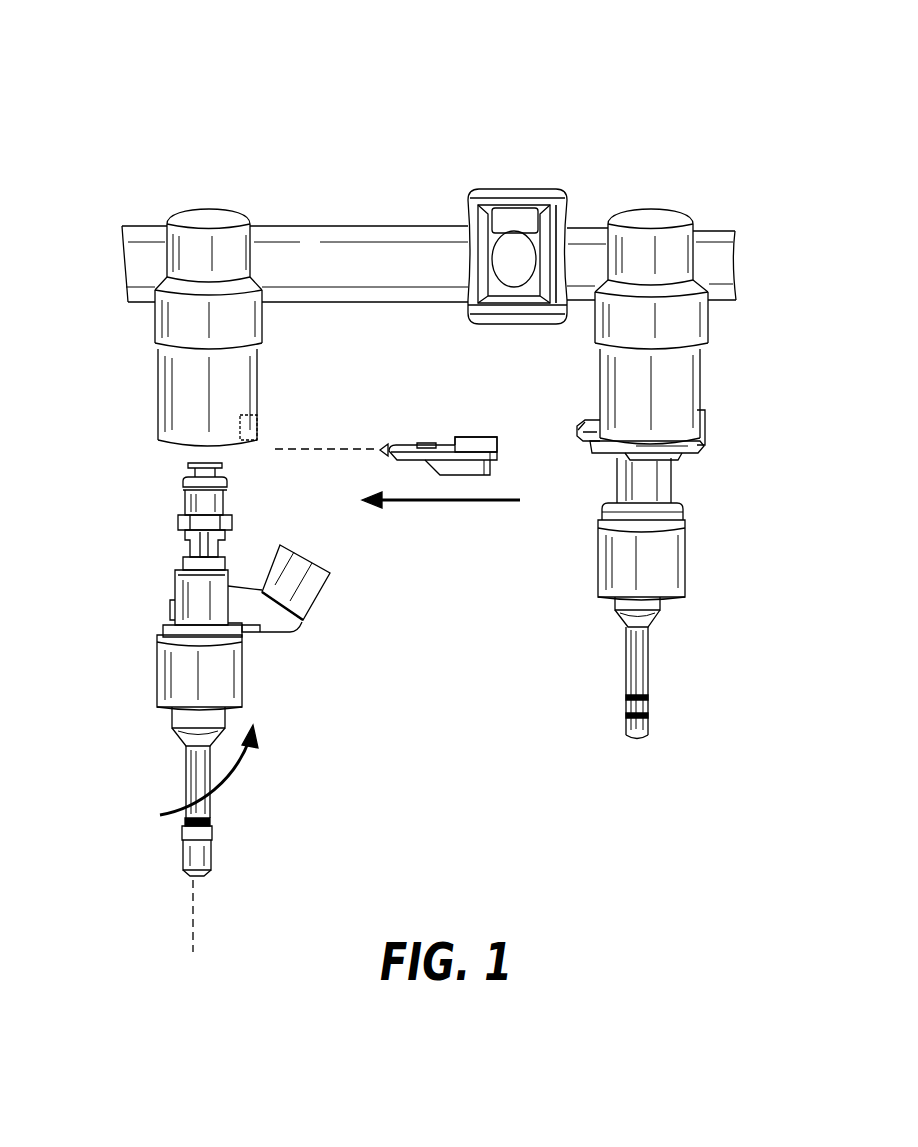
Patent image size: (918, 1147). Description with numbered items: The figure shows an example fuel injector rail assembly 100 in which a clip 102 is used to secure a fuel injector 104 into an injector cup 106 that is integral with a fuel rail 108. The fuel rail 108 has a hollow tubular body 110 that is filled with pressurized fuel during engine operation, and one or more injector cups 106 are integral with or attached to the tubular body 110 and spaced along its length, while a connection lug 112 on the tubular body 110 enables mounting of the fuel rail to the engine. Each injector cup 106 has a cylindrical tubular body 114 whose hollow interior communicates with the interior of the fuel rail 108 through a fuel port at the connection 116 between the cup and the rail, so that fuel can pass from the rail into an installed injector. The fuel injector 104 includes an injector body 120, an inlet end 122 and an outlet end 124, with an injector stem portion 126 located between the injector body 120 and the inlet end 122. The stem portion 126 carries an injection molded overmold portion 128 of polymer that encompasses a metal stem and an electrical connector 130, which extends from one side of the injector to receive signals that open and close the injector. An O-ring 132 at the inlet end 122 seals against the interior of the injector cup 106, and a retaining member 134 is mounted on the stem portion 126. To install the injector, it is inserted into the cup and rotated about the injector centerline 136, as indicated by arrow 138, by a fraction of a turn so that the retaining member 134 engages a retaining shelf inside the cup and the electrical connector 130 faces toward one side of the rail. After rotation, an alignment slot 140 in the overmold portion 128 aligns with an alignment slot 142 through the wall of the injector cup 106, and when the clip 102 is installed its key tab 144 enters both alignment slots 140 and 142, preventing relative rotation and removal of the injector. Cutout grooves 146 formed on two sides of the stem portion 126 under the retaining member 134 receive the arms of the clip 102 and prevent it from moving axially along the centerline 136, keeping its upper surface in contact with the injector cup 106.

The fuel injector rail assembly 100 is at (106, 48).
The clip 102 is at (448, 405).
The fuel injector 104 is at (144, 628).
The injector cup 106 is at (128, 320).
The fuel rail 108 is at (714, 216).
The hollow tubular body 110 is at (736, 246).
The connection lug 112 is at (543, 200).
The tubular body 114 is at (158, 392).
The connection 116 is at (266, 214).
The injector body 120 is at (692, 580).
The inlet end 122 is at (188, 465).
The outlet end 124 is at (641, 736).
The injector stem portion 126 is at (142, 545).
The overmold portion 128 is at (175, 592).
The electrical connector 130 is at (322, 598).
The O-ring 132 is at (183, 484).
The retaining member 134 is at (178, 523).
The injector centerline 136 is at (192, 922).
The arrow 138 is at (258, 762).
The alignment slot 140 is at (222, 545).
The alignment slot 142 is at (259, 430).
The key tab 144 is at (482, 438).
The cutout grooves 146 is at (185, 556).